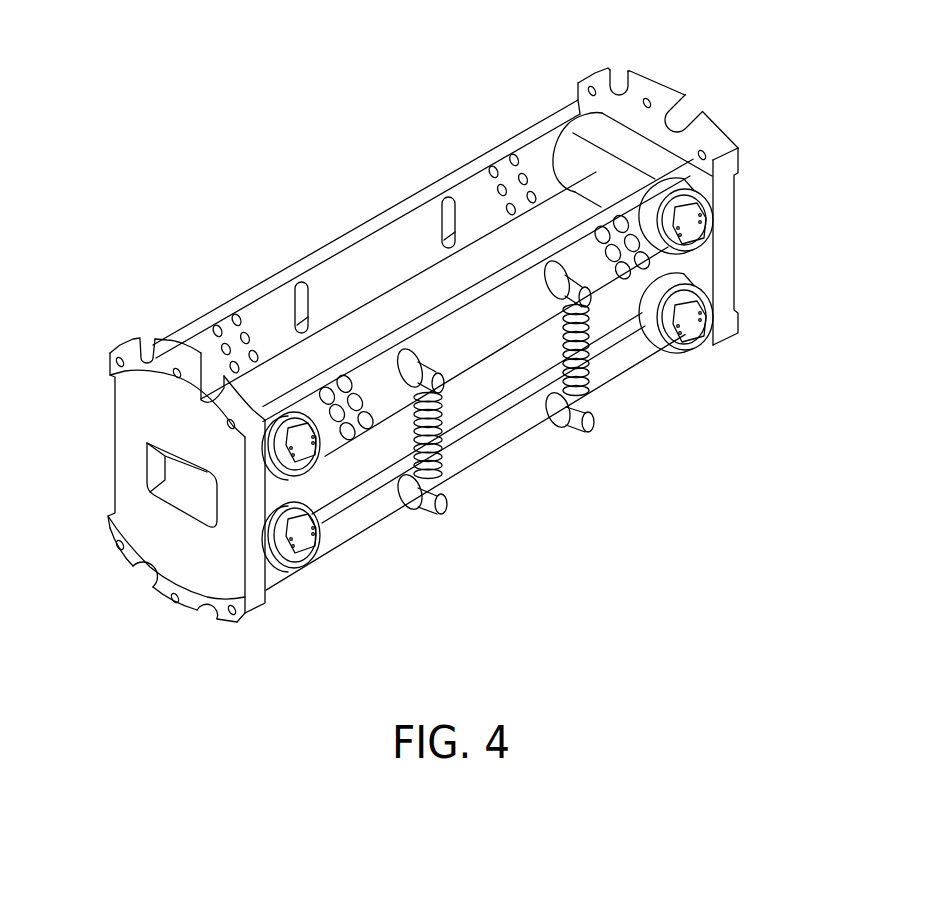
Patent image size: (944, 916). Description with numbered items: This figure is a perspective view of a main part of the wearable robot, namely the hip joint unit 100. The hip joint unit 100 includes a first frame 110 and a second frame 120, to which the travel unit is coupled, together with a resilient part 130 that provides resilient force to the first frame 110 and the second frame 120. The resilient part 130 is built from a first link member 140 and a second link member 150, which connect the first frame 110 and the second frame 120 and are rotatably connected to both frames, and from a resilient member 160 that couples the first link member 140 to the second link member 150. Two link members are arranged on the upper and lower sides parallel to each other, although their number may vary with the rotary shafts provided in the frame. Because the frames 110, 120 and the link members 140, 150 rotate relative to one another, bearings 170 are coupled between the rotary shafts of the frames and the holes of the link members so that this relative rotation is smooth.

The hip joint unit 100 is at (364, 106).
The first frame 110 is at (256, 600).
The second frame 120 is at (726, 328).
The resilient part 130 is at (652, 496).
The first link member 140 is at (525, 316).
The second link member 150 is at (503, 440).
The resilient member 160 is at (444, 462).
The bearings 170 is at (318, 410).